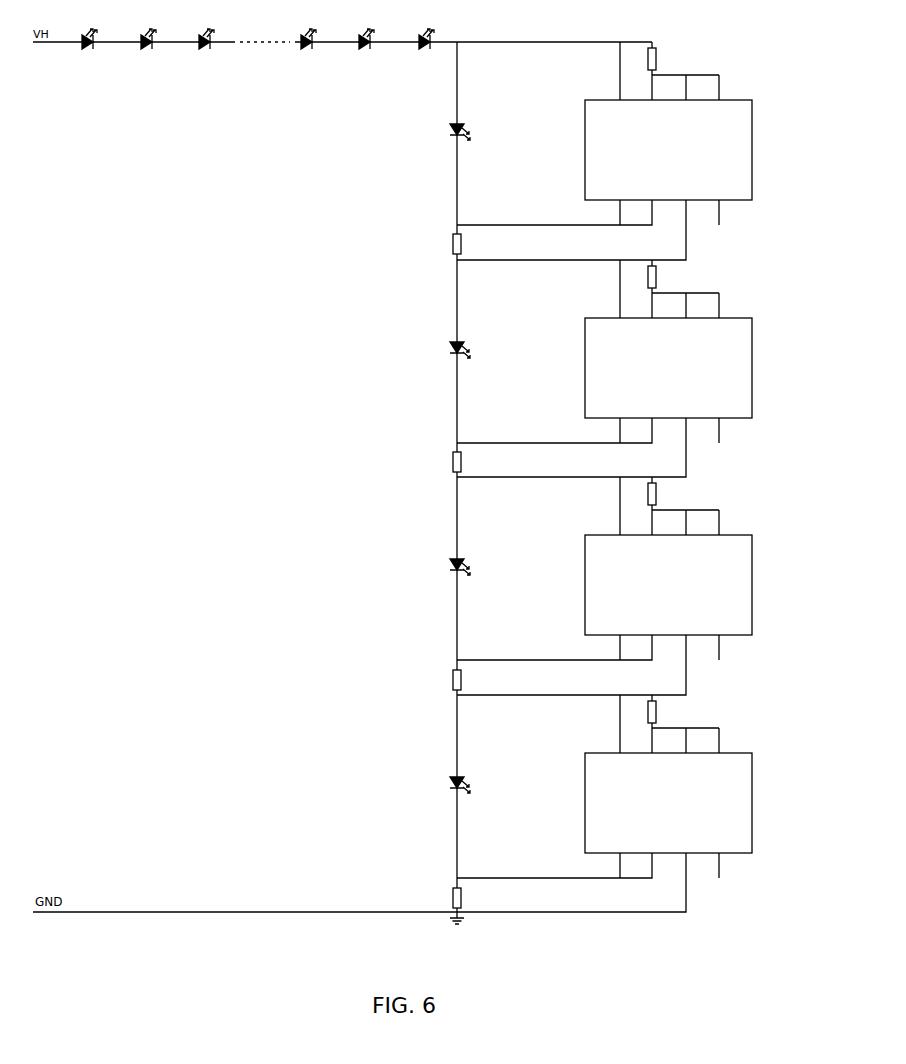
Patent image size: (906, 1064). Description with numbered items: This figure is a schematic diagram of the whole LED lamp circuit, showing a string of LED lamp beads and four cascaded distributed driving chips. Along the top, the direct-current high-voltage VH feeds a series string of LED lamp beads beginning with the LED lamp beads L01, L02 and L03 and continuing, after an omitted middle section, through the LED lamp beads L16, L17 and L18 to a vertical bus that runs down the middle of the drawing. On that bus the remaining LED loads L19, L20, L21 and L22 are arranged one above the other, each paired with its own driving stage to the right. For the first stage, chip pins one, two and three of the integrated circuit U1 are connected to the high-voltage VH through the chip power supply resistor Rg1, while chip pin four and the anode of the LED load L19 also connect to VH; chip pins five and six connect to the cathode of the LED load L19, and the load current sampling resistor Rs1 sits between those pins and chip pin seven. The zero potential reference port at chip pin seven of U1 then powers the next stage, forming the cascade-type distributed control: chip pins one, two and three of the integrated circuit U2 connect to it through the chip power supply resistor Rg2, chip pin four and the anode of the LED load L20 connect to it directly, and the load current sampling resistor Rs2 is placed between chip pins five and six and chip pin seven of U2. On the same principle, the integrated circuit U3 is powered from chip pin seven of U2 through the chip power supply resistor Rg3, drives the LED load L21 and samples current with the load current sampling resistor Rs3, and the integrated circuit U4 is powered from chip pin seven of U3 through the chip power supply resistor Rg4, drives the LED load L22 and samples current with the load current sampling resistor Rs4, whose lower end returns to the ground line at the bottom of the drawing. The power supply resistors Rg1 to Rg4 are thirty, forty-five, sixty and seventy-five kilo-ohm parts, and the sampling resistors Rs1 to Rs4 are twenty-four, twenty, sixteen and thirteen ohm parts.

The LED lamp bead L01 is at (94, 54).
The LED lamp bead L02 is at (152, 54).
The LED lamp bead L03 is at (212, 54).
The LED lamp bead L16 is at (318, 54).
The LED lamp bead L17 is at (377, 54).
The LED lamp bead L18 is at (432, 54).
The LED load L19 is at (483, 131).
The LED load L20 is at (483, 349).
The LED load L21 is at (483, 566).
The LED load L22 is at (483, 784).
The chip power supply resistor Rg1 is at (674, 57).
The chip power supply resistor Rg2 is at (674, 275).
The chip power supply resistor Rg3 is at (674, 492).
The chip power supply resistor Rg4 is at (674, 710).
The load current sampling resistor Rs1 is at (482, 245).
The load current sampling resistor Rs2 is at (482, 463).
The load current sampling resistor Rs3 is at (477, 681).
The load current sampling resistor Rs4 is at (482, 899).
The integrated circuit U1 is at (688, 152).
The integrated circuit U2 is at (688, 370).
The integrated circuit U3 is at (688, 587).
The integrated circuit U4 is at (688, 805).